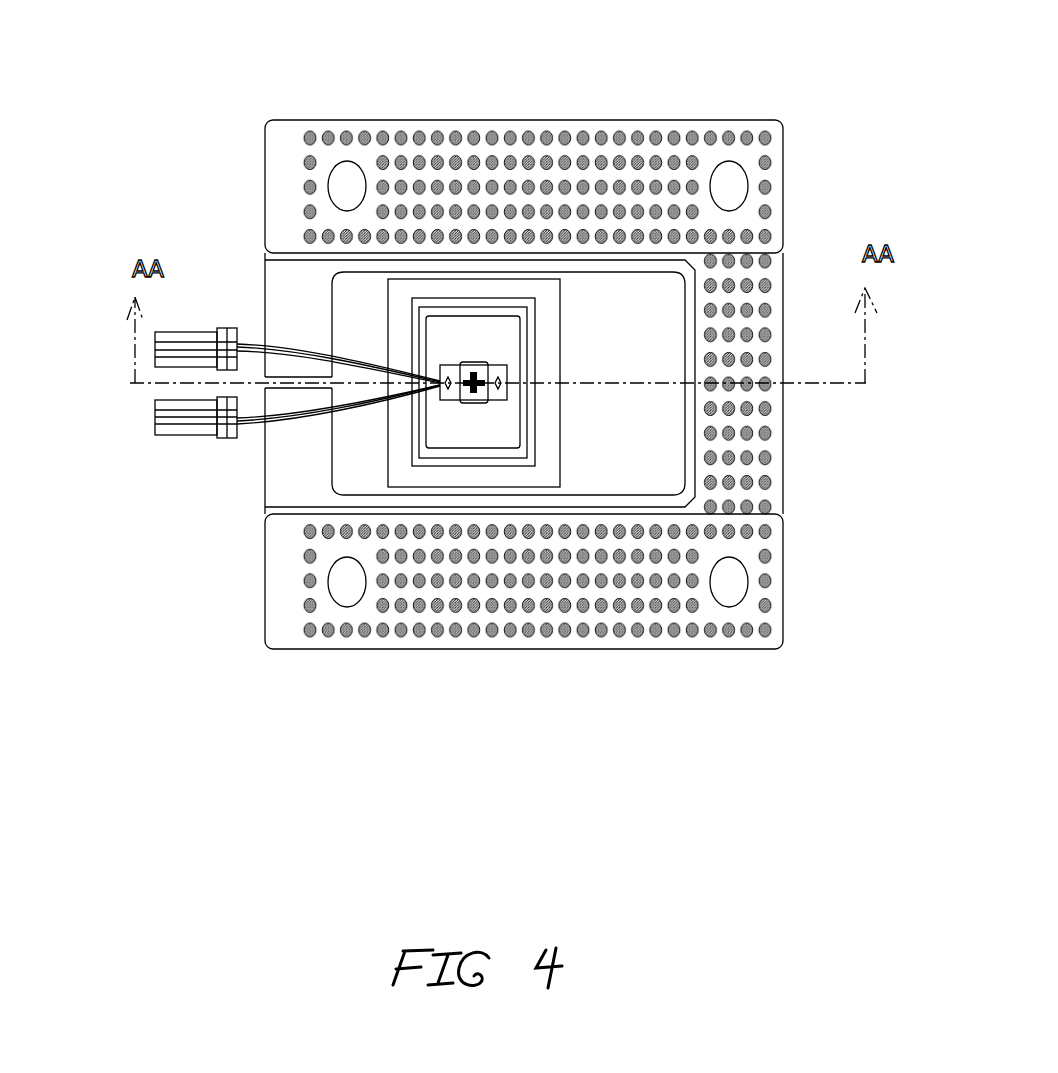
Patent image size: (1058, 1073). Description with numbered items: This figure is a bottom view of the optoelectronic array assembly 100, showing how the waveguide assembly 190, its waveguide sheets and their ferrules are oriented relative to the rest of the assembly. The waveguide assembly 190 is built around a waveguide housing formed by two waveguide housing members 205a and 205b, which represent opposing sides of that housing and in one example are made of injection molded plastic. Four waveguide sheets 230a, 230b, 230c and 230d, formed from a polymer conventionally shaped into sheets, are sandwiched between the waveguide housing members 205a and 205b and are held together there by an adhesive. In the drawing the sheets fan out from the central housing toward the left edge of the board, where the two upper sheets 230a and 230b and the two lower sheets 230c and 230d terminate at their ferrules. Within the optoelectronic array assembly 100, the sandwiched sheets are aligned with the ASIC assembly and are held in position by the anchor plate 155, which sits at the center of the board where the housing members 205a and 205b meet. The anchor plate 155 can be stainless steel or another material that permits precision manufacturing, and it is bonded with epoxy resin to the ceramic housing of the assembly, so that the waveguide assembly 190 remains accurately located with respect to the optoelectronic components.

The optoelectronic array assembly 100 is at (823, 173).
The anchor plate 155 is at (478, 338).
The waveguide assembly 190 is at (323, 330).
The waveguide housing member 205a is at (505, 373).
The waveguide housing member 205b is at (505, 395).
The waveguide sheet 230a is at (278, 348).
The waveguide sheet 230b is at (250, 343).
The waveguide sheet 230c is at (253, 422).
The waveguide sheet 230d is at (277, 417).